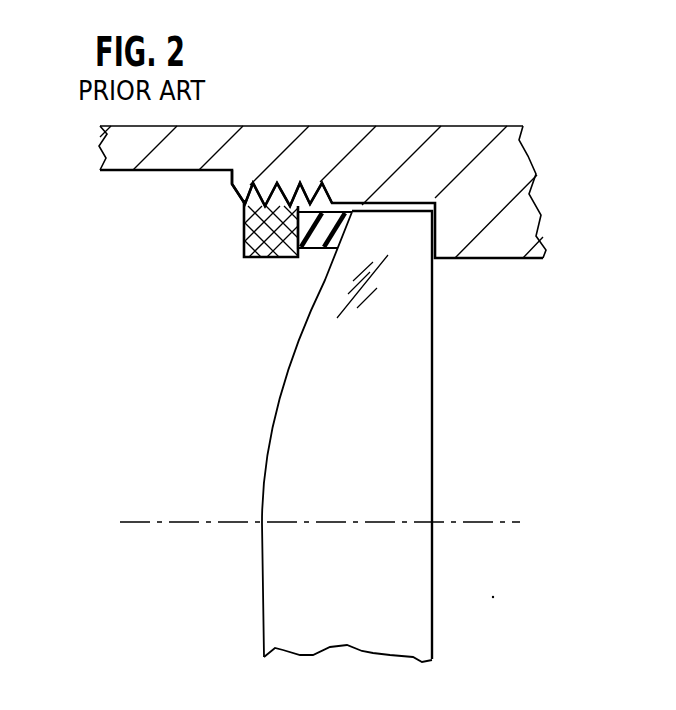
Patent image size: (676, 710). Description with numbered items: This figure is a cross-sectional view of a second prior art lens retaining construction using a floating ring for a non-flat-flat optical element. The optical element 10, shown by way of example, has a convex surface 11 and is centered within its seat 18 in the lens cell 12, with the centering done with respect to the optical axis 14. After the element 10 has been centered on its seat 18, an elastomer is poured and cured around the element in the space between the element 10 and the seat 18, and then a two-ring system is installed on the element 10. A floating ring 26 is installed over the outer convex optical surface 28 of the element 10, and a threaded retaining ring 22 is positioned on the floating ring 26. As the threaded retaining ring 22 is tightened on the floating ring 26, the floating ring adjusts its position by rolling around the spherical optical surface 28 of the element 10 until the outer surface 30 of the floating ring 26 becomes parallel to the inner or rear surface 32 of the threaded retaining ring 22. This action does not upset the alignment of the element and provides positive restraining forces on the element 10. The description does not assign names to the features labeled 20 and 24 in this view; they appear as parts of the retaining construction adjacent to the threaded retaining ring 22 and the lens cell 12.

The optical element 10 is at (403, 400).
The convex surface 11 is at (273, 433).
The lens cell 12 is at (507, 260).
The optical axis 14 is at (247, 521).
The seat 18 is at (436, 235).
The retaining band 20 is at (331, 203).
The threaded retaining ring 22 is at (243, 226).
The groove 24 is at (243, 188).
The floating ring 26 is at (304, 253).
The outer convex optical surface 28 is at (348, 222).
The outer surface of the floating ring 30 is at (298, 212).
The inner or rear surface of the threaded retaining ring 32 is at (313, 192).